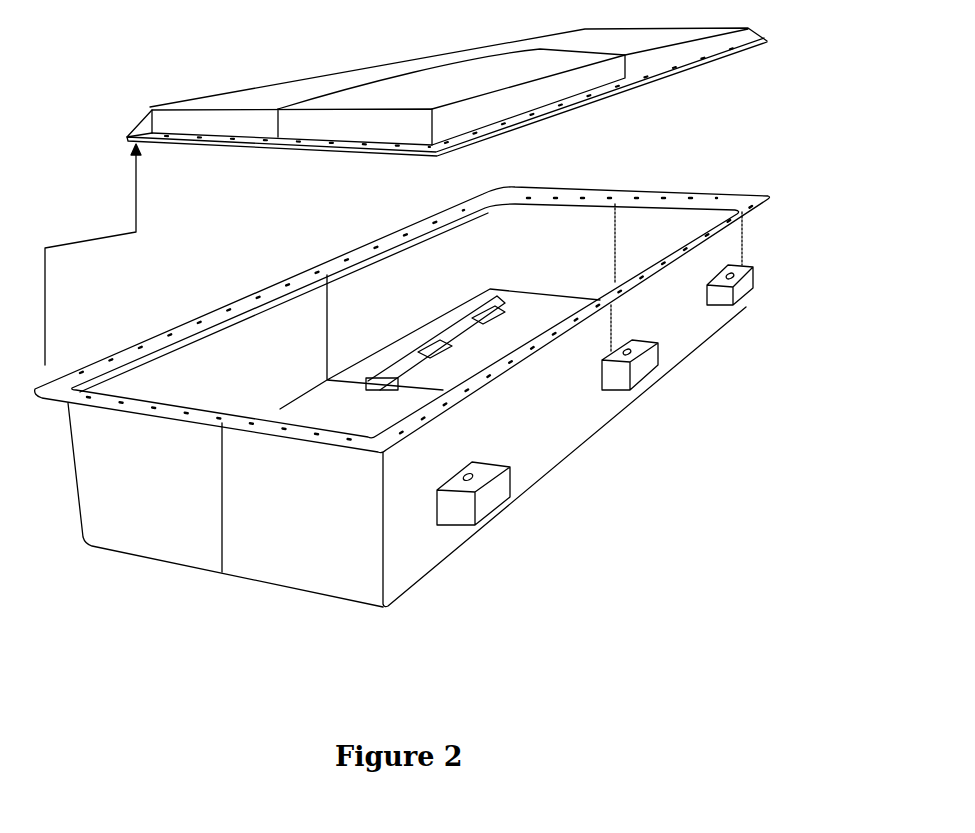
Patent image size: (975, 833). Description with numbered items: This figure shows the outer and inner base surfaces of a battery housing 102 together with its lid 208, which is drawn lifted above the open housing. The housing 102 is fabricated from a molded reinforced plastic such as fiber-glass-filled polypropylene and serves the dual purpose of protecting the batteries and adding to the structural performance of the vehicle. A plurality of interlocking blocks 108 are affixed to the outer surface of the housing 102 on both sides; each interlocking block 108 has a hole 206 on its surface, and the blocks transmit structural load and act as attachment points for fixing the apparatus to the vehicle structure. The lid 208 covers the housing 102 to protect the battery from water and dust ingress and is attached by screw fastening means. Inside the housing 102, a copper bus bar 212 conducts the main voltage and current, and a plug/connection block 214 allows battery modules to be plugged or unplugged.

The housing 102 is at (131, 475).
The interlocking block 108 is at (472, 495).
The hole 206 is at (595, 404).
The lid 208 is at (228, 93).
The bus bar 212 is at (493, 288).
The plug/connection block 214 is at (370, 378).